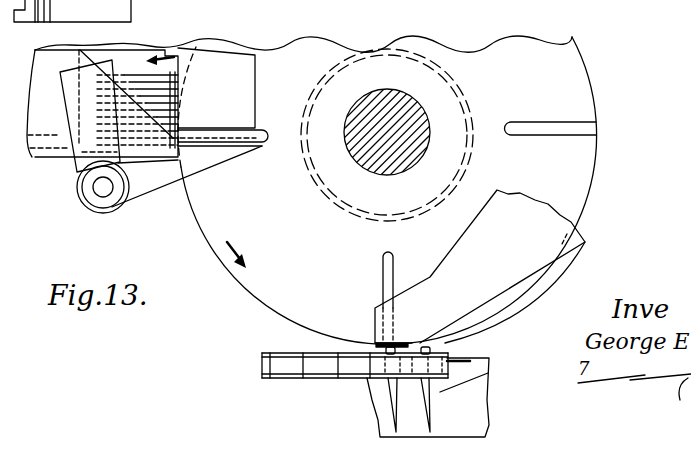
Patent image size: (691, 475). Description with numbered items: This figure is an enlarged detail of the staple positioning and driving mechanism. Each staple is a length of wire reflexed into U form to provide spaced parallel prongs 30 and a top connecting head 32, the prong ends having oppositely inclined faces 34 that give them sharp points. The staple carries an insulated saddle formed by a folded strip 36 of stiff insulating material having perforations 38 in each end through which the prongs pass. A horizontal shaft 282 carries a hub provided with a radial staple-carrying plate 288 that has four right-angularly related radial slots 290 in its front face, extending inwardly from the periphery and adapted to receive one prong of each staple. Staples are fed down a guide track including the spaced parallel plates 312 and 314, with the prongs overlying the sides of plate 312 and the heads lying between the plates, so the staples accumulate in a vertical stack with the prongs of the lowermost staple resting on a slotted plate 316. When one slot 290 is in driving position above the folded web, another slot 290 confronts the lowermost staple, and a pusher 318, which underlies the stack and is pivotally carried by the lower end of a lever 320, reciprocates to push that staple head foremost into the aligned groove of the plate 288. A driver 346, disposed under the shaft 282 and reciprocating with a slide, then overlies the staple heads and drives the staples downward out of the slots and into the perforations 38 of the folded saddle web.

The prongs 30 is at (143, 69).
The head 32 is at (438, 349).
The inclined faces 34 is at (387, 411).
The strip 36 is at (312, 363).
The perforations 38 is at (317, 391).
The horizontal shaft 282 is at (408, 113).
The staple-carrying plate 288 is at (596, 93).
The radial grooves or slots 290 is at (590, 128).
The guide plate 312 is at (155, 47).
The guide plate 314 is at (215, 60).
The slotted plate 316 is at (60, 152).
The pusher 318 is at (157, 178).
The lever 320 is at (73, 88).
The driver 346 is at (460, 252).